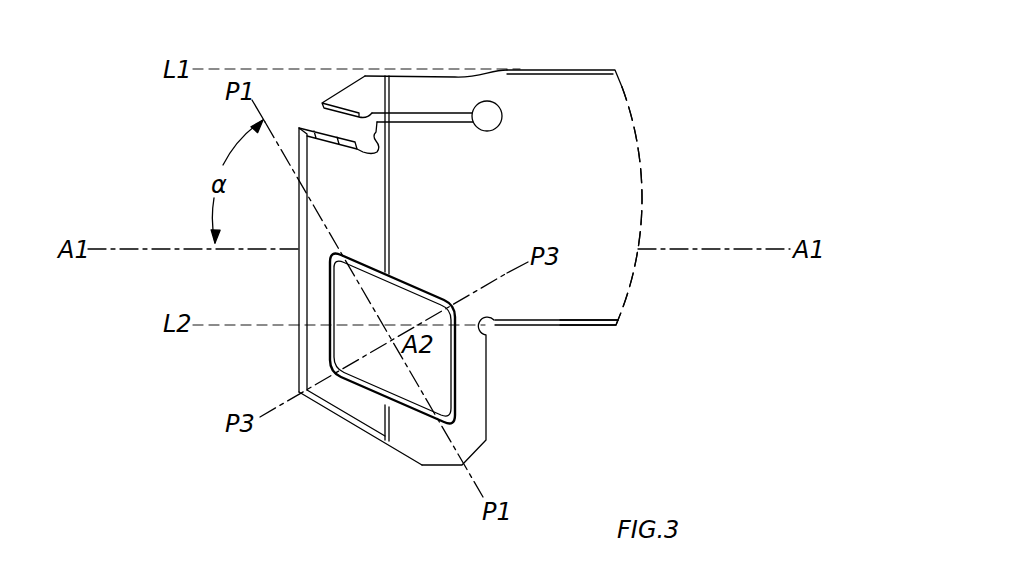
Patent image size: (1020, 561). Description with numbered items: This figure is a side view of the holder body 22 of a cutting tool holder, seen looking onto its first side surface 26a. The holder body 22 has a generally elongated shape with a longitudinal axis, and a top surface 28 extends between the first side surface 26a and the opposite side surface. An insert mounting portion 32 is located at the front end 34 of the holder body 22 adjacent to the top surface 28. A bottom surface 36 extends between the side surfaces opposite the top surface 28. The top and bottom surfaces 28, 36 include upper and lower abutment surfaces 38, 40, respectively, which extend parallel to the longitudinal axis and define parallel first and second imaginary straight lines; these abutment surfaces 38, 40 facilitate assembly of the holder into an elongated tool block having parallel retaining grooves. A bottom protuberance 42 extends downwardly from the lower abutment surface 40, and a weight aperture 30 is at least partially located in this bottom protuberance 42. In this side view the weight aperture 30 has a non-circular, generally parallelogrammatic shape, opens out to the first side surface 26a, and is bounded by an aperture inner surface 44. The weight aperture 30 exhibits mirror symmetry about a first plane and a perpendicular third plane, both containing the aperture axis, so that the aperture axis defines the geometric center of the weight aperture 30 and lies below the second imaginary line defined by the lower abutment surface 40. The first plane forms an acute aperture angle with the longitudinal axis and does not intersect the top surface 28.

The holder body 22 is at (650, 120).
The first side surface 26a is at (600, 190).
The top surface 28 is at (462, 77).
The weight aperture 30 is at (377, 382).
The insert mounting portion 32 is at (358, 92).
The front end 34 is at (298, 283).
The bottom surface 36 is at (530, 325).
The upper abutment surface 38 is at (590, 67).
The lower abutment surface 40 is at (595, 325).
The bottom protuberance 42 is at (472, 383).
The aperture inner surface 44 is at (450, 390).